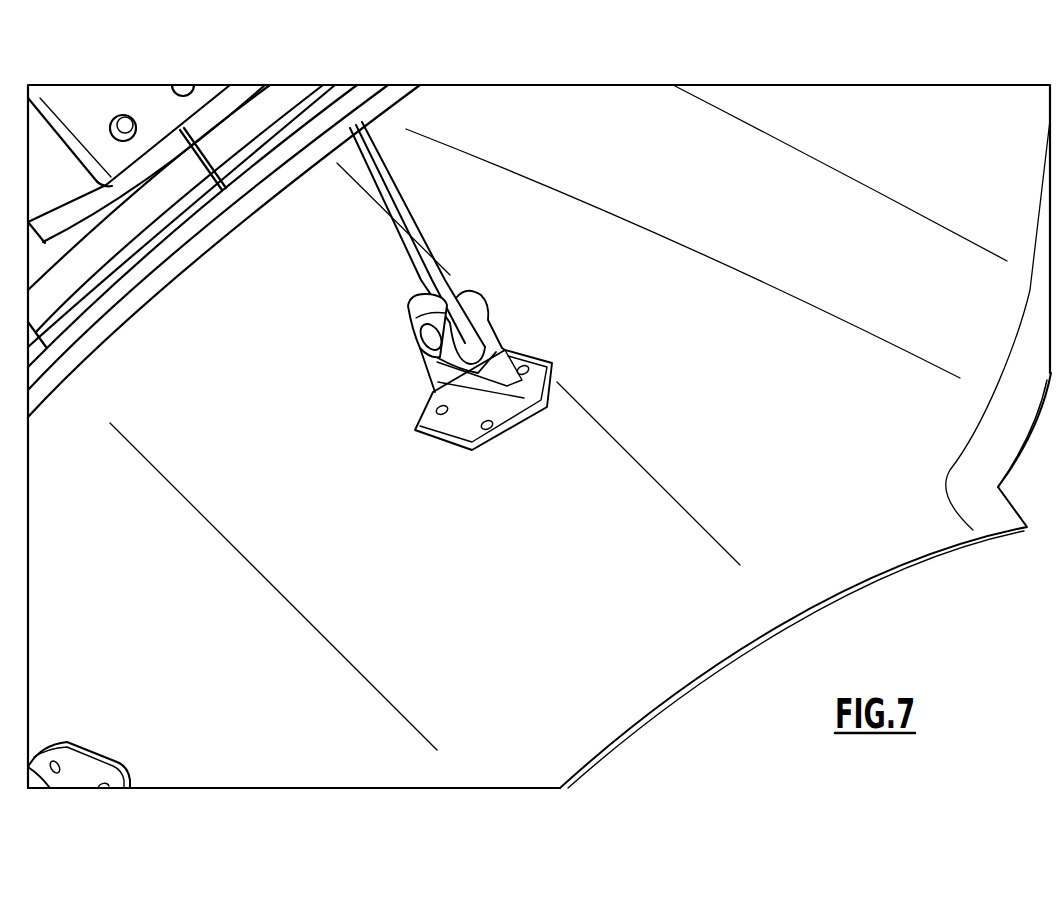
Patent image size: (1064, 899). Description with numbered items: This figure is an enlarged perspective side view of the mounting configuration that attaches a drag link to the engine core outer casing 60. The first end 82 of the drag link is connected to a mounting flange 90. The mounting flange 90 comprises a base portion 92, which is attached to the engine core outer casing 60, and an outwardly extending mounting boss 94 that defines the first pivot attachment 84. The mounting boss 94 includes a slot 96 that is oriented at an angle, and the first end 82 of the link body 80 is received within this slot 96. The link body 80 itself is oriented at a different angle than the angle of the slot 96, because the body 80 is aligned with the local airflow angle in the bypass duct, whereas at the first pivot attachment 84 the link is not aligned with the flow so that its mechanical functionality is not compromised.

The engine core outer casing 60 is at (583, 122).
The link body 80 is at (404, 231).
The first end 82 is at (450, 298).
The first pivot attachment 84 is at (431, 343).
The mounting flange 90 is at (456, 373).
The base portion 92 is at (465, 417).
The mounting boss 94 is at (489, 338).
The slot 96 is at (412, 291).